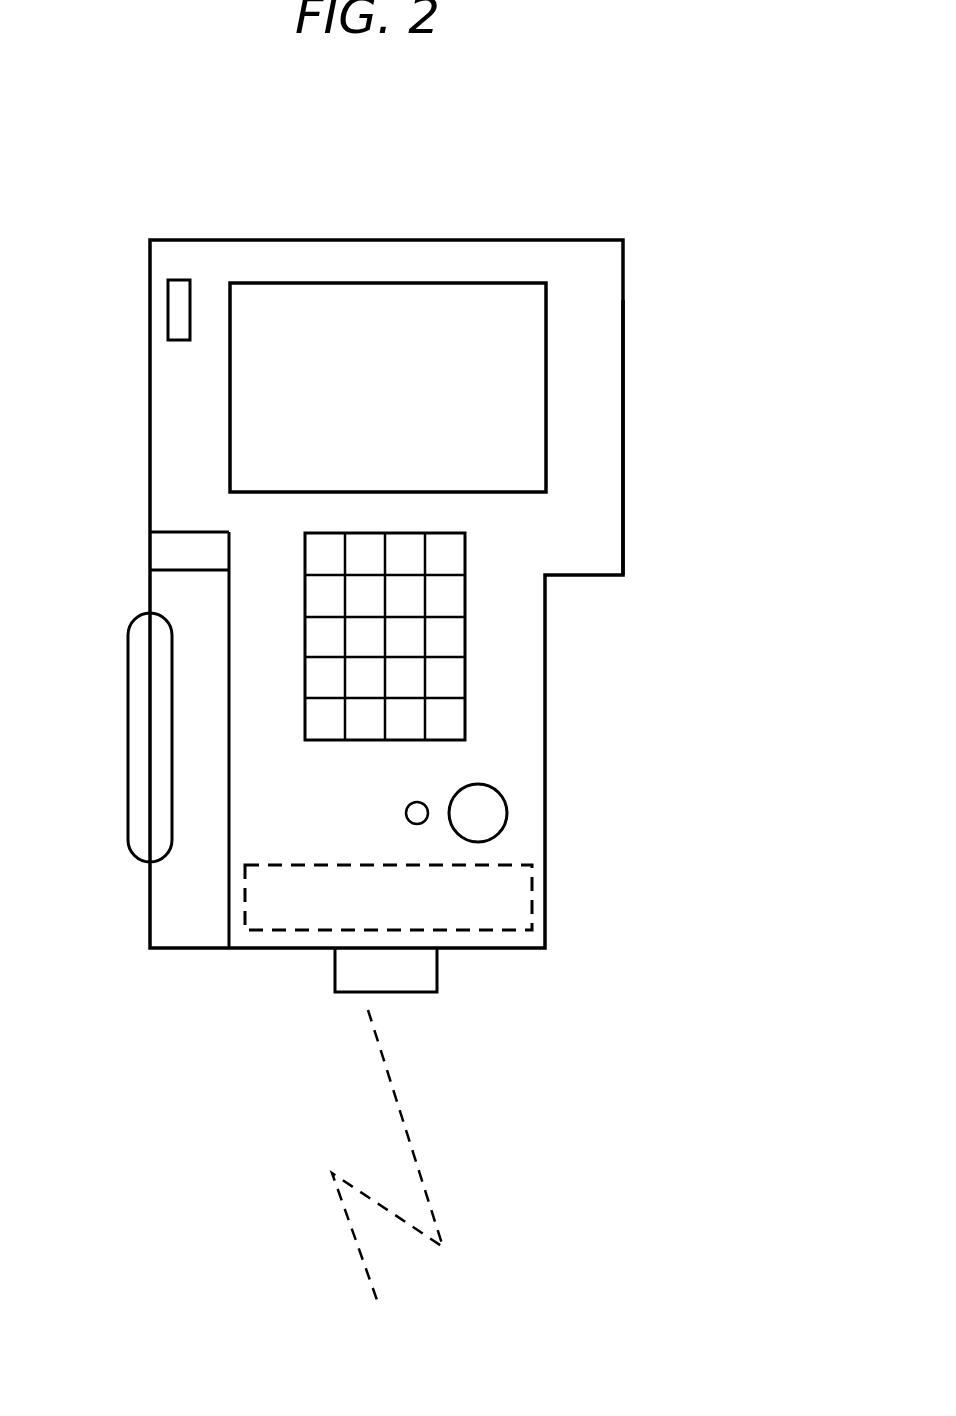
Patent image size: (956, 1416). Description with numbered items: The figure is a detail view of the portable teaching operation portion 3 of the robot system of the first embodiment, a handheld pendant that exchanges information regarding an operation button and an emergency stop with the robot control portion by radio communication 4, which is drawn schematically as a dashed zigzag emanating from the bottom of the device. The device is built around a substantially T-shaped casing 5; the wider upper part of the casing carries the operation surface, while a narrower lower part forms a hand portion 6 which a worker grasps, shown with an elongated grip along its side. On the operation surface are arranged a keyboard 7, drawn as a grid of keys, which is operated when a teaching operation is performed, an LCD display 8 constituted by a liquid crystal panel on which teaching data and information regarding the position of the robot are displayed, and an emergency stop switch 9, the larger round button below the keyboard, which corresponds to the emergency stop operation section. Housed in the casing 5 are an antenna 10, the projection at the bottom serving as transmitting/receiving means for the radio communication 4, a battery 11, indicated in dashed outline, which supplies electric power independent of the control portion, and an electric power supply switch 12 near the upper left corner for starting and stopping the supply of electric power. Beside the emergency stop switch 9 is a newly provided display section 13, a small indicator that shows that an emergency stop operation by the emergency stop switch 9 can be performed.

The portable teaching operation portion 3 is at (176, 218).
The radio communication 4 is at (385, 1072).
The casing 5 is at (612, 407).
The hand portion 6 is at (147, 738).
The keyboard 7 is at (450, 640).
The LCD display 8 is at (392, 315).
The emergency stop switch 9 is at (495, 812).
The antenna 10 is at (405, 990).
The battery 11 is at (538, 900).
The electric power supply switch 12 is at (178, 312).
The display section 13 is at (405, 812).